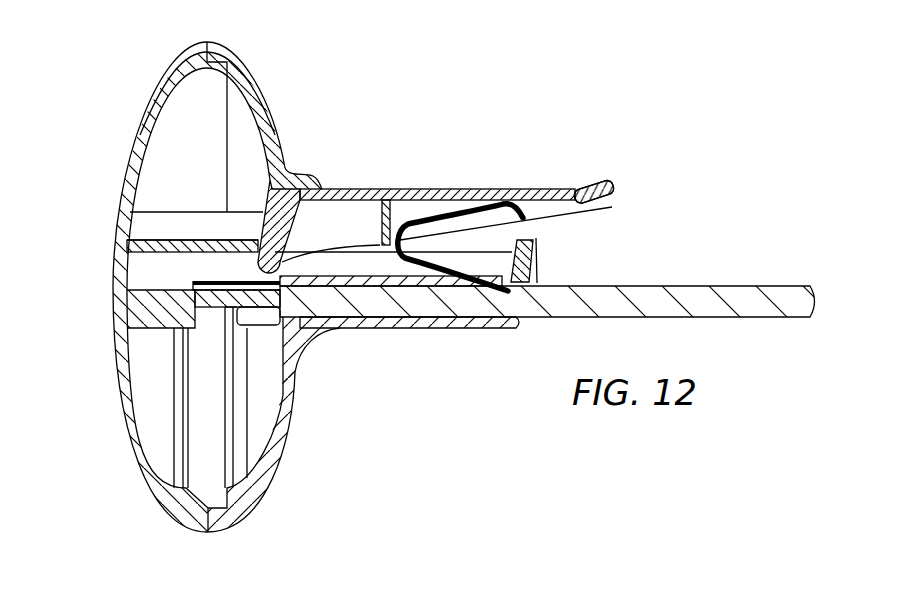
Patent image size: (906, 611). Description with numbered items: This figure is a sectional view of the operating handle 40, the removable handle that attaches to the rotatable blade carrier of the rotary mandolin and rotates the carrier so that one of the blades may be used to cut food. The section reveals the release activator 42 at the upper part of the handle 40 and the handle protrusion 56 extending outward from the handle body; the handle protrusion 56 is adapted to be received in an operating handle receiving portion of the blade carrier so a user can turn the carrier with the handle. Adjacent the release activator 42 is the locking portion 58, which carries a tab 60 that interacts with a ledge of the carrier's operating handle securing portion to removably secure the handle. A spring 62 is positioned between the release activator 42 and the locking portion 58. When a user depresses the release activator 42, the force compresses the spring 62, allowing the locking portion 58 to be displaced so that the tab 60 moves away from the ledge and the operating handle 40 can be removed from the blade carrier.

The operating handle 40 is at (122, 415).
The release activator 42 is at (333, 188).
The handle protrusion 56 is at (700, 317).
The locking portion 58 is at (610, 182).
The tab 60 is at (577, 180).
The spring 62 is at (446, 206).